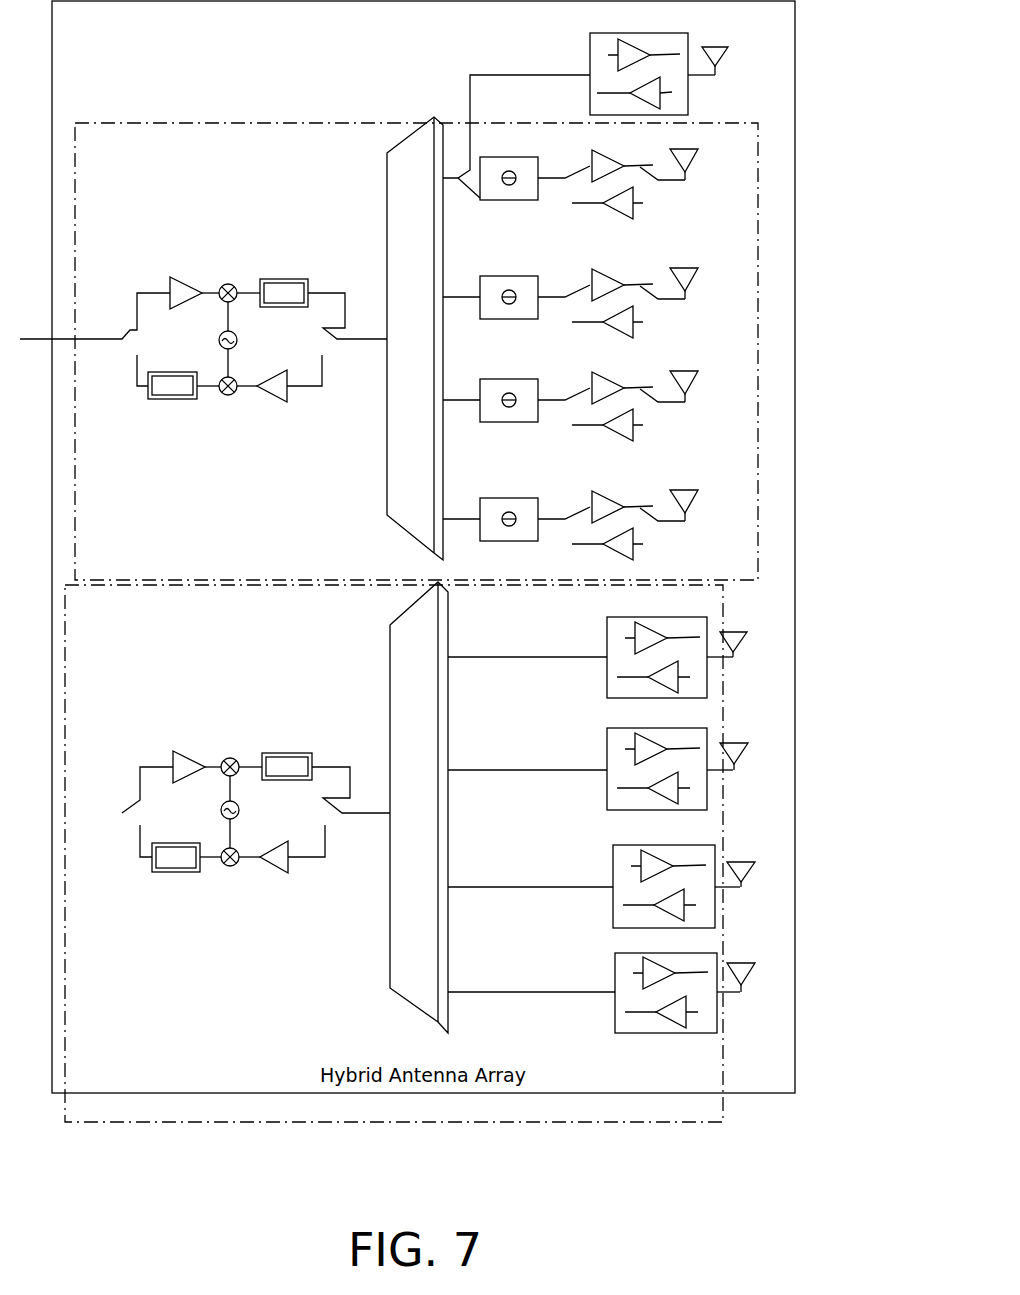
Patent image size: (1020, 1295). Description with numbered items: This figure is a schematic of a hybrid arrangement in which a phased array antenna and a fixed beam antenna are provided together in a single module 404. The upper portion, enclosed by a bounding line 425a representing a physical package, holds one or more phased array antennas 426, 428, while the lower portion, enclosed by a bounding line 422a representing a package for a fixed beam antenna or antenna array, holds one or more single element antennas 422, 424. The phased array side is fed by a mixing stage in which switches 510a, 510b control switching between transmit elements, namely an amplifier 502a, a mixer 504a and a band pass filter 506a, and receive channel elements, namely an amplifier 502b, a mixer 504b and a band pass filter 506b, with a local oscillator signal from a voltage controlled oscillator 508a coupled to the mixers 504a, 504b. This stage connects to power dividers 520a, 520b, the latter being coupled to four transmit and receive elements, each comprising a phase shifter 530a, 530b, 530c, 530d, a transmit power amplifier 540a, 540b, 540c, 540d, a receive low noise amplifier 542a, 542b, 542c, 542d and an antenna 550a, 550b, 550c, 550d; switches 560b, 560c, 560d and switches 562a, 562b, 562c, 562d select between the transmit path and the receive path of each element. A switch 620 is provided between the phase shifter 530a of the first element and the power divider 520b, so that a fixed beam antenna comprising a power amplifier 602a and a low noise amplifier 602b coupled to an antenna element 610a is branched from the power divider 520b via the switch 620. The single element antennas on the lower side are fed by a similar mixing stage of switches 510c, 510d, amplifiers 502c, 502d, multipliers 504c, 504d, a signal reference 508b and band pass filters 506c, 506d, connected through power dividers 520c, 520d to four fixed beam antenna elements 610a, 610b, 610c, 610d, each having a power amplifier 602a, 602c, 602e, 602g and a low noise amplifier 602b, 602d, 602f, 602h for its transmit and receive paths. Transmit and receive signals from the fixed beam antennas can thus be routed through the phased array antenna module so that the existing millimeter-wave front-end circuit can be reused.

The single module 404 is at (793, 60).
The phased array antenna 426 is at (486, 351).
The phased array antenna 428 is at (812, 198).
The phased array sub-array 425a is at (486, 351).
The fixed beam antenna 422 is at (483, 853).
The single element antenna 424 is at (812, 648).
The bounding line 422a is at (483, 861).
The amplifier 502a is at (170, 281).
The amplifier 502b is at (298, 398).
The power amplifier 502c is at (172, 752).
The power amplifier 502d is at (305, 870).
The mixer 504a is at (225, 284).
The mixer 504b is at (232, 395).
The multiplier 504c is at (228, 758).
The multiplier 504d is at (235, 866).
The band pass filter 506a is at (290, 279).
The band pass filter 506b is at (170, 399).
The band pass filter 506c is at (292, 753).
The band pass filter 506d is at (175, 872).
The voltage controlled oscillator 508a is at (220, 338).
The signal reference 508b is at (221, 808).
The switch 510a is at (126, 335).
The switch 510b is at (340, 328).
The switch 510c is at (123, 803).
The switch 510d is at (345, 800).
The power divider 520a is at (402, 318).
The power divider 520b is at (438, 116).
The power divider 520c is at (393, 796).
The power divider 520d is at (440, 584).
The phase shifter 530a is at (500, 157).
The phase shifter 530b is at (500, 276).
The phase shifter 530c is at (500, 379).
The phase shifter 530d is at (500, 498).
The transmit power amplifier 540a is at (600, 150).
The transmit power amplifier 540b is at (600, 269).
The transmit power amplifier 540c is at (600, 372).
The transmit power amplifier 540d is at (600, 491).
The receive low noise amplifier 542a is at (633, 218).
The receive low noise amplifier 542b is at (633, 337).
The receive low noise amplifier 542c is at (633, 440).
The receive low noise amplifier 542d is at (633, 559).
The antenna 550a is at (698, 149).
The antenna 550b is at (698, 268).
The antenna 550c is at (698, 371).
The antenna 550d is at (698, 490).
The switch 560b is at (565, 297).
The switch 560c is at (565, 400).
The switch 560d is at (565, 519).
The switch 562a is at (660, 180).
The switch 562b is at (660, 299).
The switch 562c is at (660, 402).
The switch 562d is at (660, 521).
The power amplifier 602a is at (630, 40).
The low noise amplifier 602b is at (660, 106).
The power amplifier 602c is at (660, 734).
The low noise amplifier 602d is at (680, 808).
The power amplifier 602e is at (665, 851).
The low noise amplifier 602f is at (690, 926).
The power amplifier 602g is at (665, 959).
The low noise amplifier 602h is at (690, 1031).
The antenna element 610a is at (728, 47).
The antenna element 610b is at (748, 743).
The antenna element 610c is at (755, 862).
The antenna element 610d is at (755, 963).
The switch 620 is at (470, 190).